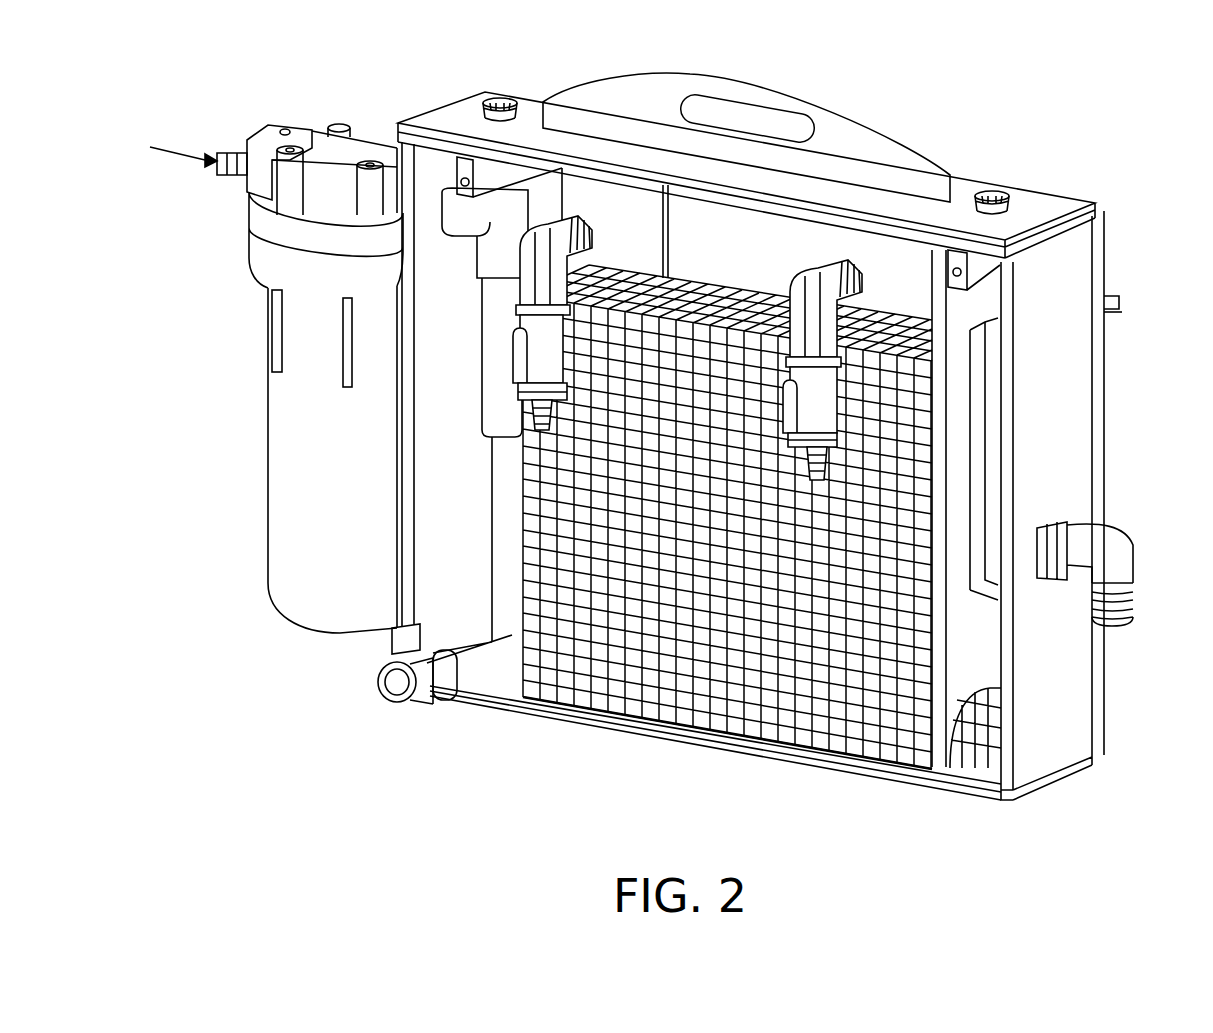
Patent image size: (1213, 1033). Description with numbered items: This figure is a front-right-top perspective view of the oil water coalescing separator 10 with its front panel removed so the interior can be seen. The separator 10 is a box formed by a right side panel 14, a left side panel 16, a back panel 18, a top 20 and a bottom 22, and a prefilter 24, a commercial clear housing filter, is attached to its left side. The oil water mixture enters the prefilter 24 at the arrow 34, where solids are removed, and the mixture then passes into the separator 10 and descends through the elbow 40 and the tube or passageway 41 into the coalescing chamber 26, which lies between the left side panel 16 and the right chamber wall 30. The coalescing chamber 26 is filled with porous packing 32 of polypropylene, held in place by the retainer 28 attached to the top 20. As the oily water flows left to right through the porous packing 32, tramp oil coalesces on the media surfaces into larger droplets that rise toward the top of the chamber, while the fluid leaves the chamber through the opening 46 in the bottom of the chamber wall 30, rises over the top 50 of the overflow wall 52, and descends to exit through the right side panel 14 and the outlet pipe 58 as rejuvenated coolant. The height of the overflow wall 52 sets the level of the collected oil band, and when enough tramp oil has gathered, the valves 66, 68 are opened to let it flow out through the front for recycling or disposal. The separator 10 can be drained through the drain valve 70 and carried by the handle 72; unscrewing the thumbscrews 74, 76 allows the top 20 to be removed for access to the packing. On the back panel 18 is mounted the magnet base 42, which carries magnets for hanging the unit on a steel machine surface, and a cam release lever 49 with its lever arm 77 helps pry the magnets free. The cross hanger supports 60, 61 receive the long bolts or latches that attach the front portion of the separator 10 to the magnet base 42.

The oil water coalescing separator 10 is at (577, 727).
The right side panel 14 is at (1063, 763).
The left side panel 16 is at (420, 549).
The back panel 18 is at (1104, 710).
The top 20 is at (953, 180).
The bottom 22 is at (767, 757).
The prefilter 24 is at (266, 557).
The coalescing chamber 26 is at (512, 637).
The retainer 28 is at (607, 190).
The right chamber wall 30 is at (1000, 295).
The porous packing 32 is at (744, 674).
The arrow 34 is at (175, 150).
The elbow 40 is at (477, 258).
The tube or passageway 41 is at (482, 382).
The magnet base 42 is at (1106, 433).
The opening 46 is at (973, 742).
The cam release lever 49 is at (1119, 297).
The top of overflow wall 50 is at (990, 330).
The overflow wall 52 is at (985, 410).
The outlet pipe 58 is at (1135, 548).
The cross hanger support 60 is at (462, 168).
The cross hanger support 61 is at (990, 267).
The valve 66 is at (578, 248).
The valve 68 is at (808, 298).
The drain valve 70 is at (380, 683).
The handle 72 is at (648, 80).
The thumbscrew 74 is at (502, 98).
The thumbscrew 76 is at (996, 191).
The lever arm 77 is at (1122, 312).